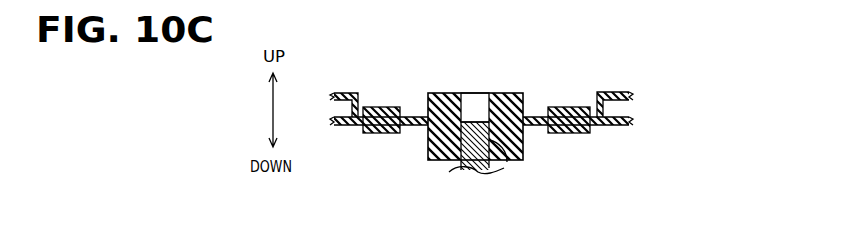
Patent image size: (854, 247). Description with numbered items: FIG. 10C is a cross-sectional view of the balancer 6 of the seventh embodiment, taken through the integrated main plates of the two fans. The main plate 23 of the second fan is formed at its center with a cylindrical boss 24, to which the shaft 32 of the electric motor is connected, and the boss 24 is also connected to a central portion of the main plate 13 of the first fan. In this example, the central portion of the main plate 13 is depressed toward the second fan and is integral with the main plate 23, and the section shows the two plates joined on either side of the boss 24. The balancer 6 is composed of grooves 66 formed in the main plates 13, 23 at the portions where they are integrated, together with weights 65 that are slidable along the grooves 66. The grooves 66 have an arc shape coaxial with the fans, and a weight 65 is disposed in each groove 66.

The main plate 13 is at (343, 92).
The main plate 23 is at (343, 127).
The balancer 6 is at (387, 89).
The weight 65 is at (578, 106).
The groove 66 is at (575, 134).
The cylindrical boss 24 is at (428, 140).
The shaft 32 is at (507, 162).